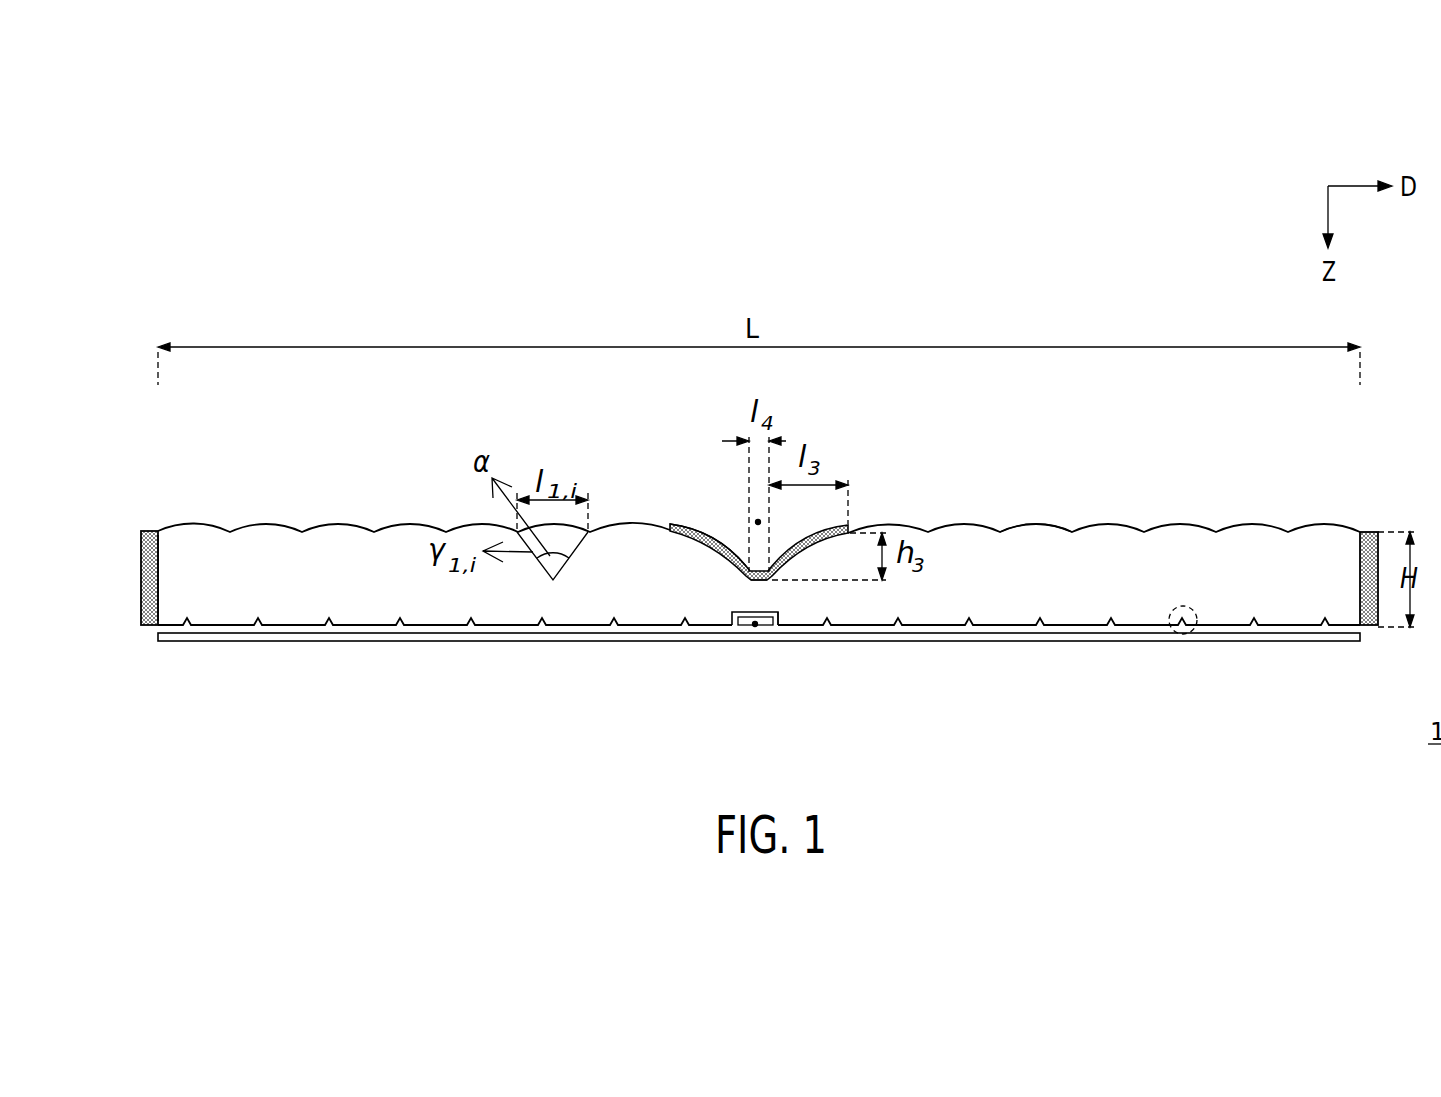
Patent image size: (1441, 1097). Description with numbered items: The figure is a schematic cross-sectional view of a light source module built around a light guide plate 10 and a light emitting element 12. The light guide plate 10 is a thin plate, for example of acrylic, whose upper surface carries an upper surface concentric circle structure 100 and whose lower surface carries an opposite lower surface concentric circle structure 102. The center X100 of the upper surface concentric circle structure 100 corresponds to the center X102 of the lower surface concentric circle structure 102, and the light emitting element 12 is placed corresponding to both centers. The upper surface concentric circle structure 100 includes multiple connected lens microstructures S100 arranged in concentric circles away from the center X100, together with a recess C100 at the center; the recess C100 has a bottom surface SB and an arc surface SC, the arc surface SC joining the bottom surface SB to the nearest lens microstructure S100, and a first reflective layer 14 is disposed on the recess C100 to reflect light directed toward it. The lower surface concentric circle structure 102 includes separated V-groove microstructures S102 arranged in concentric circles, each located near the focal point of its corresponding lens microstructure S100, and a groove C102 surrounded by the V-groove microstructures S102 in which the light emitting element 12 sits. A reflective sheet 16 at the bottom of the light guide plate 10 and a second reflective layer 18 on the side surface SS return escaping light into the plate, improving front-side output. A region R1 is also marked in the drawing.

The light guide plate 10 is at (1332, 542).
The light emitting element 12 is at (763, 620).
The first reflective layer 14 is at (848, 524).
The reflective sheet 16 is at (372, 640).
The second reflective layer 18 is at (150, 625).
The side surface SS is at (148, 580).
The arc surface SC is at (684, 548).
The bottom surface SB is at (754, 593).
The region R1 is at (1197, 610).
The upper surface concentric circle structure 100 is at (200, 77).
The lower surface concentric circle structure 102 is at (352, 77).
The center of the upper surface concentric circle structure X100 is at (758, 522).
The lens microstructures S100 is at (1043, 514).
The recess C100 is at (695, 705).
The center of the lower surface concentric circle structure X102 is at (755, 625).
The V-groove microstructures S102 is at (1053, 614).
The groove C102 is at (790, 618).